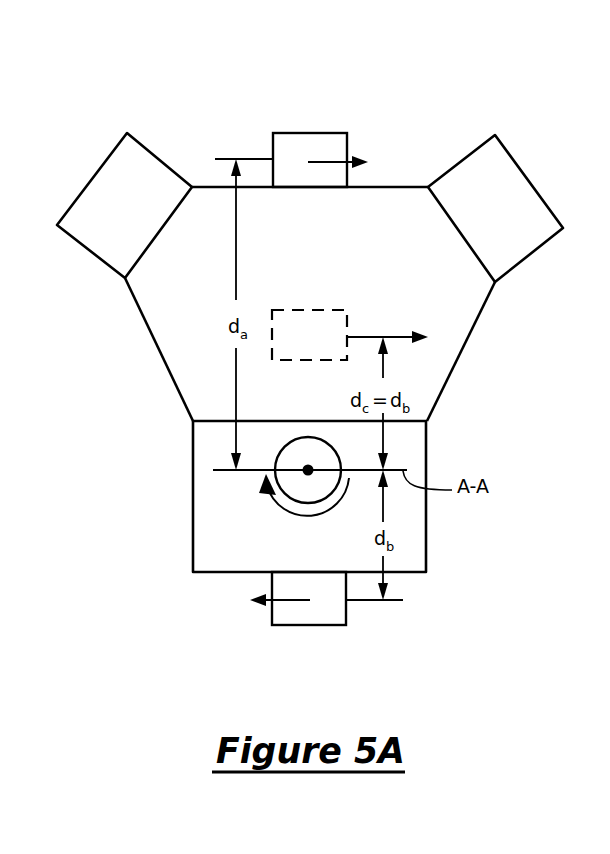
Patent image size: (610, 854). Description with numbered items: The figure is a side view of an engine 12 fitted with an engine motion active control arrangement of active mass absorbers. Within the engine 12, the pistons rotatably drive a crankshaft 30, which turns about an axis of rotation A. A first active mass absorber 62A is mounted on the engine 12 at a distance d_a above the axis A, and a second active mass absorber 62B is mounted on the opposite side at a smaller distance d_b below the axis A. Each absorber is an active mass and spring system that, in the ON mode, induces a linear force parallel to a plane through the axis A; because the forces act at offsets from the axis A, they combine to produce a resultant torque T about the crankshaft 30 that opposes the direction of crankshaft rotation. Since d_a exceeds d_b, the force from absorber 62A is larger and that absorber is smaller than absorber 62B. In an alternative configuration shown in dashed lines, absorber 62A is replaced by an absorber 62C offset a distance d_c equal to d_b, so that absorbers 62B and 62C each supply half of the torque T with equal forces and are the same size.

The engine 12 is at (168, 367).
The first active mass absorber 62A is at (318, 133).
The second active mass absorber 62B is at (328, 625).
The alternative active mass absorber 62C is at (302, 310).
The crankshaft 30 is at (304, 507).
The axis of rotation A is at (306, 472).
The resultant torque T is at (327, 514).